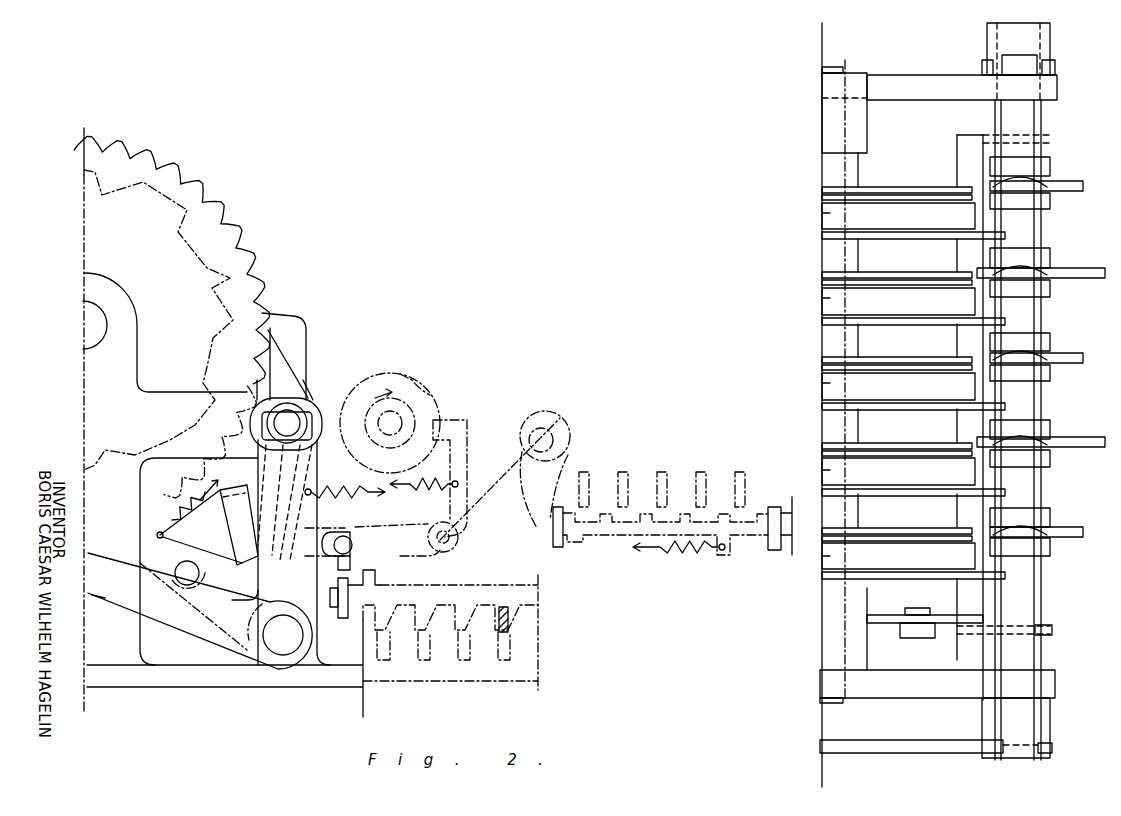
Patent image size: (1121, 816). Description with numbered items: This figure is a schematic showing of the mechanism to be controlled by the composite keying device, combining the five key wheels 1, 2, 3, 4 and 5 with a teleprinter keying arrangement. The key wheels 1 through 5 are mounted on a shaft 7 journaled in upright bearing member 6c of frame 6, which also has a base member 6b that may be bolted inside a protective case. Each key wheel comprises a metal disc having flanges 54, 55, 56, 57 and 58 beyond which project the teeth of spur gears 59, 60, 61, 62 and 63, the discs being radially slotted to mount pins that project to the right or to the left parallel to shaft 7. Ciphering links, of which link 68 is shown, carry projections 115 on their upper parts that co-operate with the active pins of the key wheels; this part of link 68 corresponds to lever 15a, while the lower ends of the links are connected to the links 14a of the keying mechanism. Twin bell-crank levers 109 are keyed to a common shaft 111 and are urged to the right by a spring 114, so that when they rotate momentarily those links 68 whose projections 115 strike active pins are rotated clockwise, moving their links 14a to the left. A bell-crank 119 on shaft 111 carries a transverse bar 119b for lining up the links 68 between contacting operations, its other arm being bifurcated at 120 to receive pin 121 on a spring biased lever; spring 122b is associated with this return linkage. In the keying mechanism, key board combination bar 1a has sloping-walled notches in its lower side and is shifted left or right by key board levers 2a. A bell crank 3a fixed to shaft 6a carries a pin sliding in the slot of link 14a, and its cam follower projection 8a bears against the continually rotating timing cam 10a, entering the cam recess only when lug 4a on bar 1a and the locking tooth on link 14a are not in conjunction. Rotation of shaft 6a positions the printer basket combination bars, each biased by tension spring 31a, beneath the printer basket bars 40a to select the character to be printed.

The key wheel 1 is at (822, 556).
The key wheel 2 is at (822, 470).
The key wheel 3 is at (822, 383).
The key wheel 4 is at (822, 298).
The key wheel 5 is at (822, 213).
The key board combination bar 1a is at (435, 632).
The key board lever 2a is at (499, 611).
The bell crank 3a is at (372, 535).
The lug 4a is at (375, 578).
The frame 6 is at (150, 665).
The shaft 6a is at (553, 428).
The base member 6b is at (192, 688).
The upright bearing member 6c is at (112, 282).
The shaft 7 is at (83, 325).
The cam follower projection 8a is at (455, 420).
The timing cam 10a is at (390, 372).
The link 14a is at (328, 532).
The lever 15a is at (307, 347).
The tension spring 31a is at (675, 555).
The printer basket bar 40a is at (622, 473).
The flange 54 is at (898, 548).
The flange 55 is at (898, 464).
The flange 56 is at (898, 378).
The flange 57 is at (898, 293).
The flange 58 is at (898, 208).
The spur gear 59 is at (127, 172).
The spur gear 60 is at (1003, 493).
The spur gear 61 is at (1003, 408).
The spur gear 62 is at (1003, 323).
The spur gear 63 is at (1003, 238).
The ciphering link 68 is at (305, 331).
The bell-crank lever 109 is at (114, 596).
The shaft 111 is at (291, 645).
The spring 114 is at (382, 500).
The projection 115 is at (260, 313).
The bell-crank 119 is at (222, 513).
The transverse bar 119b is at (247, 479).
The bifurcation 120 is at (187, 550).
The pin 121 is at (176, 565).
The spring 122b is at (176, 504).